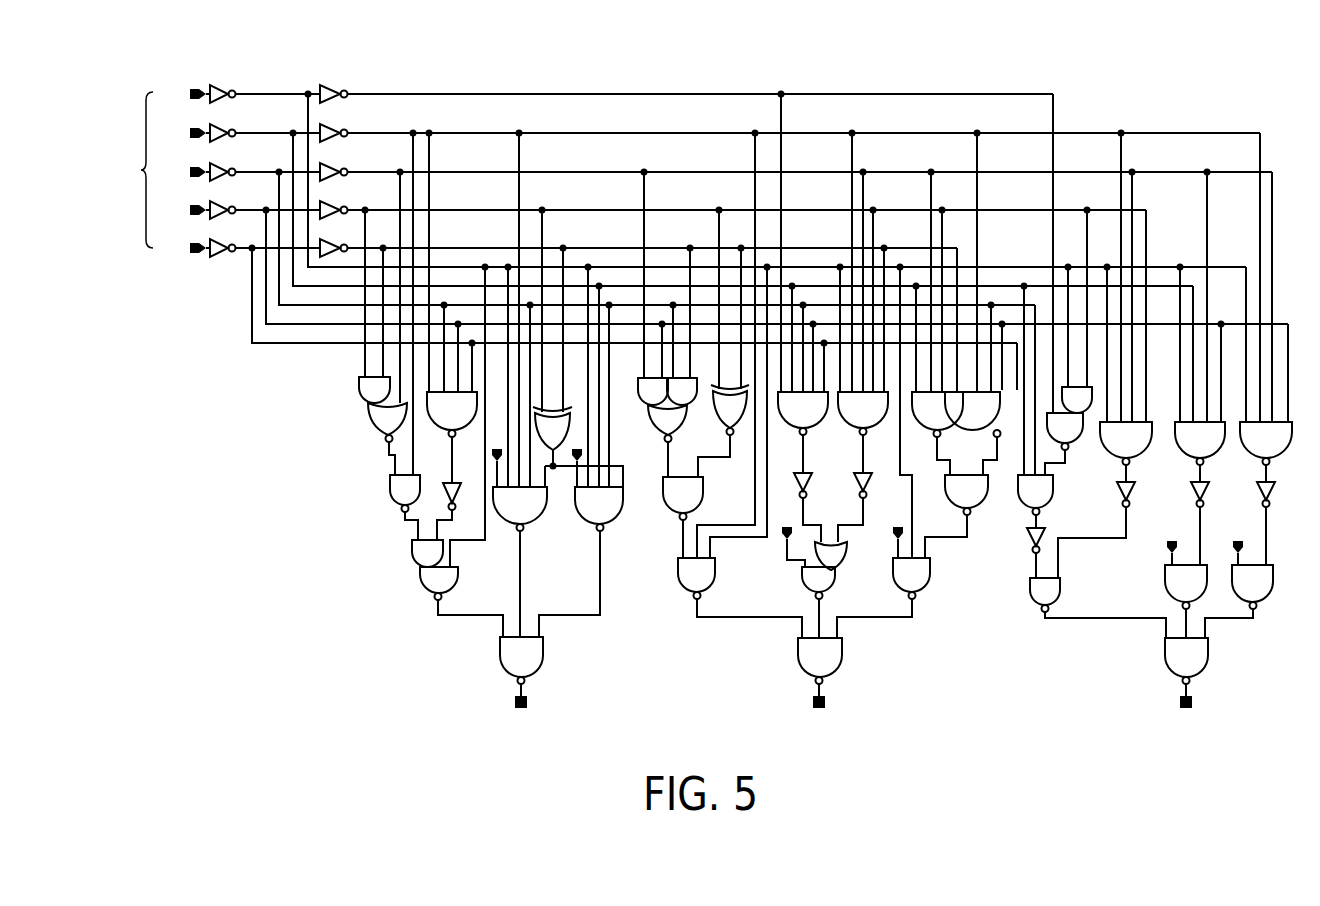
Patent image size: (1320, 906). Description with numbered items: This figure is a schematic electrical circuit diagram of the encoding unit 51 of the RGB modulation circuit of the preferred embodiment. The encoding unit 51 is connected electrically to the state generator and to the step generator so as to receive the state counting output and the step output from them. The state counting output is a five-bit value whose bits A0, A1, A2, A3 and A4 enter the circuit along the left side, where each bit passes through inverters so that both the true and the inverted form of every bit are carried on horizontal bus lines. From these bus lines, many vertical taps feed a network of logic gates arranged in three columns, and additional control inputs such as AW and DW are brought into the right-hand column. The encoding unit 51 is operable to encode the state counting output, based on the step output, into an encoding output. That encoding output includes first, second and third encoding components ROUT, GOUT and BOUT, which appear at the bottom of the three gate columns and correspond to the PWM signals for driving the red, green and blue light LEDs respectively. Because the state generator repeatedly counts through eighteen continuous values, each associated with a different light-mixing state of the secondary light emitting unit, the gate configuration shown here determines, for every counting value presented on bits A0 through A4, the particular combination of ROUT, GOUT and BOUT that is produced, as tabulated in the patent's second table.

The encoding unit 51 is at (1154, 94).
The state counting output bit A4 is at (703, 173).
The state counting output bit A3 is at (710, 202).
The state counting output bit A2 is at (716, 231).
The state counting output bit A1 is at (724, 259).
The state counting output bit A0 is at (588, 288).
The second encoding component GOUT is at (491, 563).
The third encoding component BOUT is at (784, 563).
The first encoding component ROUT is at (1102, 568).
The AW control input AW is at (1174, 544).
The DW control input DW is at (1240, 544).